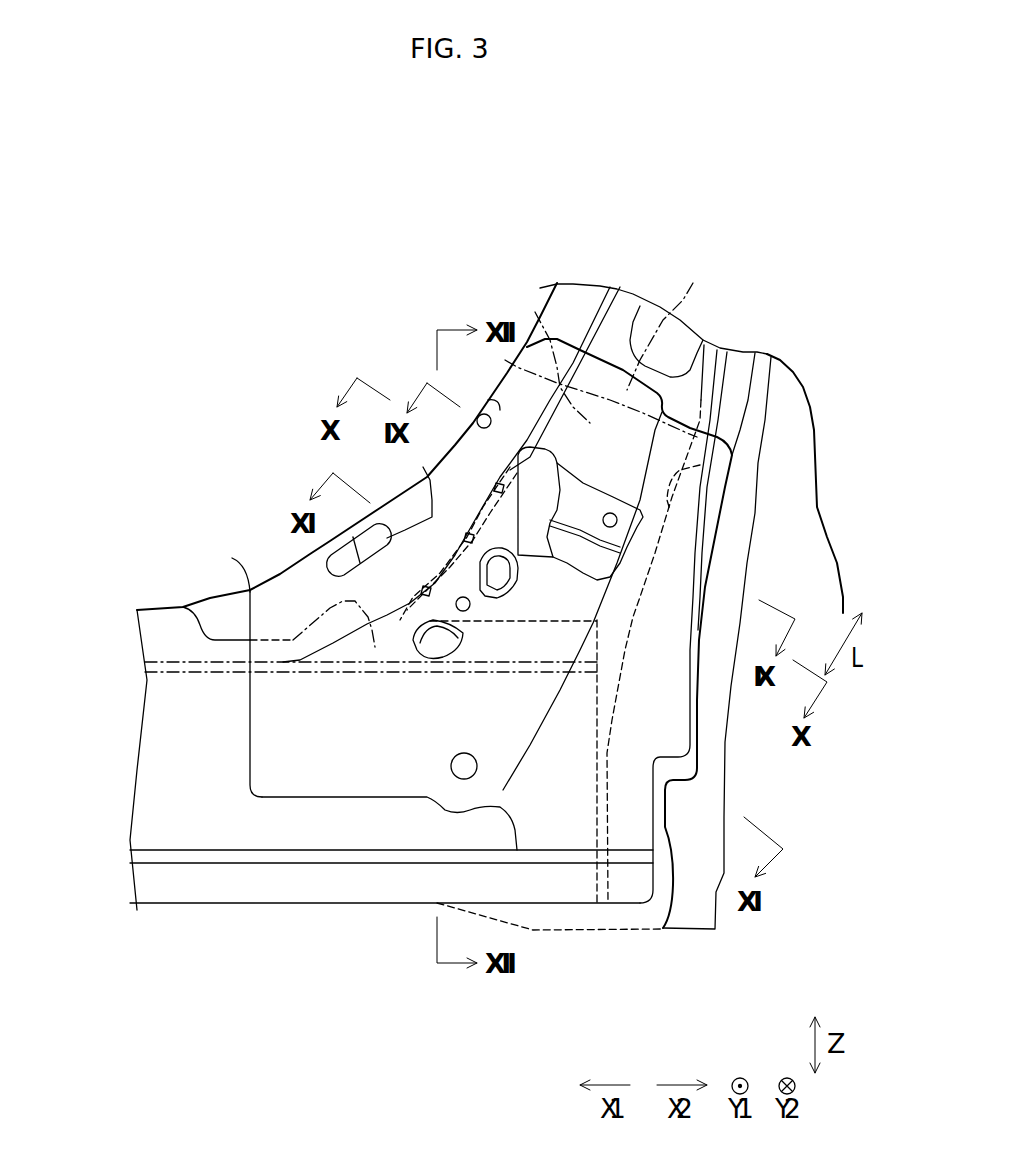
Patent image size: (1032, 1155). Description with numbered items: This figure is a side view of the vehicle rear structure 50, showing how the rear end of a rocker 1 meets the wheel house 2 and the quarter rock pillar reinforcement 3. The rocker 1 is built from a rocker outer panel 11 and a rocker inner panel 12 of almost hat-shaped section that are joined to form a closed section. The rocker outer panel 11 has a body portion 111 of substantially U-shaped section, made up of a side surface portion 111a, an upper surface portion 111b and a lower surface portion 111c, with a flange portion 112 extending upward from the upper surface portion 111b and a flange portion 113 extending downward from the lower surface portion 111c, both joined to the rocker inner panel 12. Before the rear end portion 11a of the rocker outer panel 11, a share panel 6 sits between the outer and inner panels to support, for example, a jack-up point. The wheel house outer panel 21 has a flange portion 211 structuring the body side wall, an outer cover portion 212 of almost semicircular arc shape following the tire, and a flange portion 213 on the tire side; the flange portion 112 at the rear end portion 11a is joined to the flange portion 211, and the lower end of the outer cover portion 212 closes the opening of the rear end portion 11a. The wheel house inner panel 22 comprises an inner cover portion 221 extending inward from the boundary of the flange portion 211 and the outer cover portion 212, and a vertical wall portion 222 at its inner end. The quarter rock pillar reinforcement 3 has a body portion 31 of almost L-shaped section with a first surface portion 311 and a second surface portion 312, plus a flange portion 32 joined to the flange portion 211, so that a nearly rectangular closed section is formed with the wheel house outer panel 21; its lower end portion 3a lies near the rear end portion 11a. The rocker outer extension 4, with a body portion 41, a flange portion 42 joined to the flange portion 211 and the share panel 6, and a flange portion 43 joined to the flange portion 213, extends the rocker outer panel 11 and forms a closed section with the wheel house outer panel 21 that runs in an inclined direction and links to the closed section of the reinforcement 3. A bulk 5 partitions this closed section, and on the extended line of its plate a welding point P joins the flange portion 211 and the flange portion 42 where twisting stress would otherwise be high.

The rocker 1 is at (164, 914).
The rocker outer panel 11 is at (270, 830).
The rear end portion of the rocker outer panel 11a is at (568, 820).
The body portion 111 is at (217, 827).
The side surface portion 111a is at (180, 755).
The upper surface portion 111b is at (182, 668).
The lower surface portion 111c is at (183, 850).
The flange portion 112 is at (190, 623).
The flange portion 113 is at (345, 870).
The rocker inner panel 12 is at (157, 633).
The wheel house 2 is at (852, 263).
The wheel house outer panel 21 is at (752, 378).
The flange portion 211 is at (547, 337).
The outer cover portion 212 is at (700, 465).
The flange portion 213 is at (735, 390).
The wheel house inner panel 22 is at (790, 380).
The inner cover portion 221 is at (755, 437).
The vertical wall portion 222 is at (791, 516).
The quarter rock pillar reinforcement 3 is at (566, 293).
The lower end portion of the quarter rock pillar reinforcement 3a is at (670, 322).
The body portion 31 is at (728, 195).
The first surface portion 311 is at (633, 303).
The second surface portion 312 is at (620, 290).
The flange portion 32 is at (580, 292).
The rocker outer extension 4 is at (397, 770).
The body portion 41 is at (350, 777).
The flange portion 42 is at (443, 477).
The flange portion 43 is at (667, 699).
The bulk 5 is at (398, 630).
The vehicle rear structure 50 is at (382, 348).
The share panel 6 is at (335, 568).
The welding point P is at (490, 390).